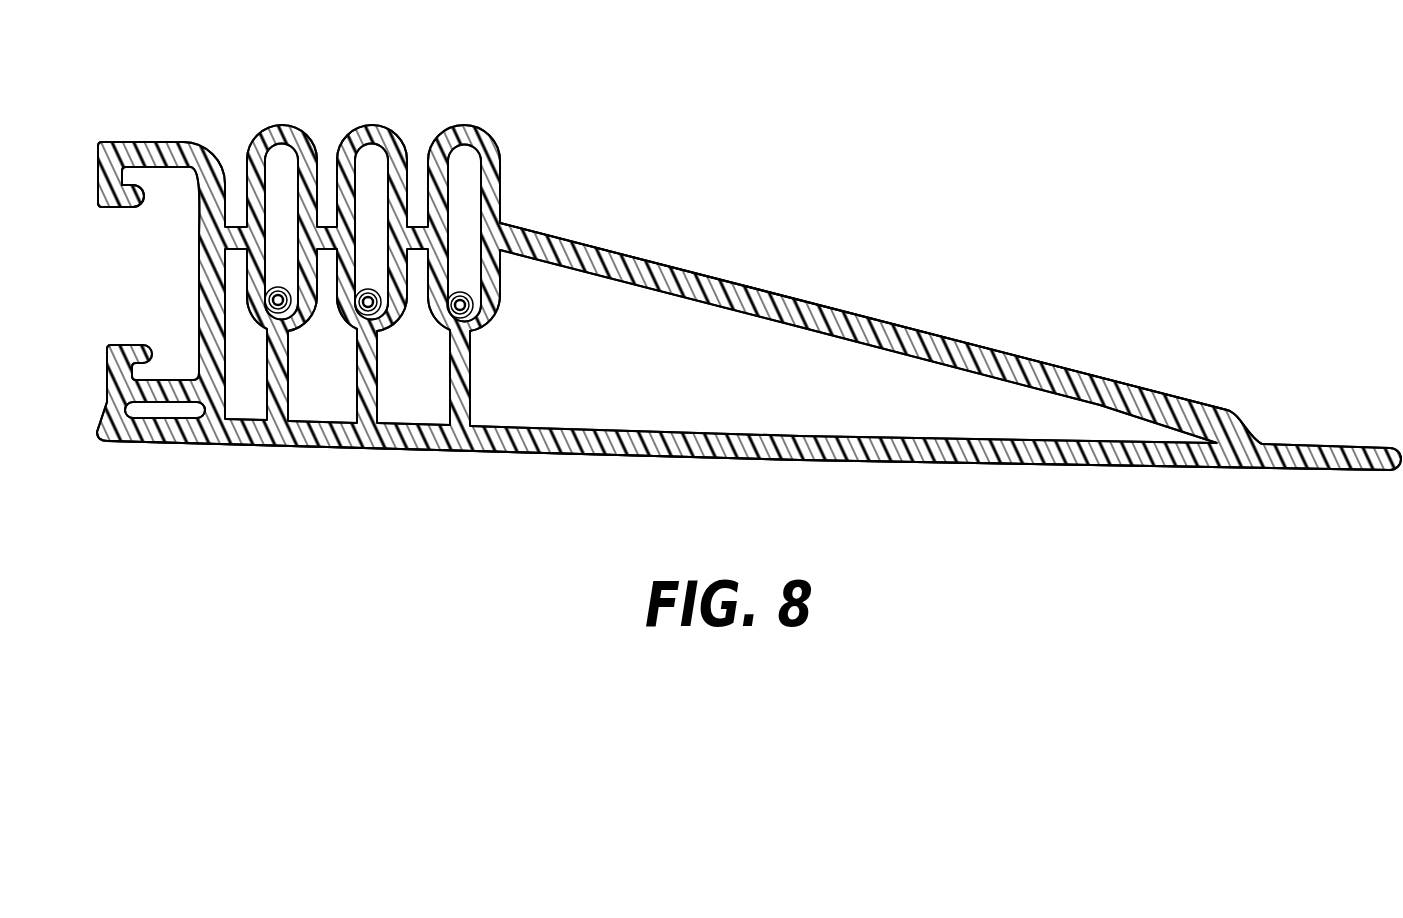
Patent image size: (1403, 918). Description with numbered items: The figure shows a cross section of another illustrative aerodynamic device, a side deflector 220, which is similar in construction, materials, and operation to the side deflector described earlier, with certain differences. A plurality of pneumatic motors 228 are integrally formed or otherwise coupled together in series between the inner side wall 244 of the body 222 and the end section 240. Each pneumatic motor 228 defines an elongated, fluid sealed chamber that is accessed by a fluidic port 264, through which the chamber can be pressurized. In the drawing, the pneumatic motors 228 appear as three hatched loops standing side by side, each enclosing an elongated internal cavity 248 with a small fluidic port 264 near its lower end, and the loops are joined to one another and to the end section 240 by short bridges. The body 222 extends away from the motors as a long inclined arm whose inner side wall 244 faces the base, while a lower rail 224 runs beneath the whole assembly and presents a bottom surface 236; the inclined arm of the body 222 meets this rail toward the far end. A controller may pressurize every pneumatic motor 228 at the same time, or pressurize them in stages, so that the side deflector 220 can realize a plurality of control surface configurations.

The side deflector 220 is at (784, 253).
The body 222 is at (574, 240).
The base rail 224 is at (578, 453).
The pneumatic motor 228 is at (283, 120).
The bottom surface of base rail 236 is at (867, 461).
The end section 240 is at (199, 250).
The inner side wall 244 is at (838, 310).
The slot in spring loop 248 is at (280, 162).
The fluidic port 264 is at (266, 298).